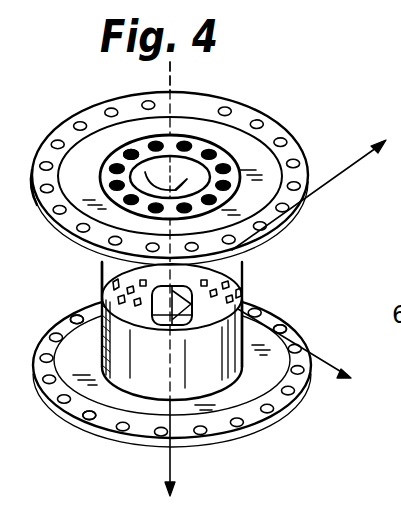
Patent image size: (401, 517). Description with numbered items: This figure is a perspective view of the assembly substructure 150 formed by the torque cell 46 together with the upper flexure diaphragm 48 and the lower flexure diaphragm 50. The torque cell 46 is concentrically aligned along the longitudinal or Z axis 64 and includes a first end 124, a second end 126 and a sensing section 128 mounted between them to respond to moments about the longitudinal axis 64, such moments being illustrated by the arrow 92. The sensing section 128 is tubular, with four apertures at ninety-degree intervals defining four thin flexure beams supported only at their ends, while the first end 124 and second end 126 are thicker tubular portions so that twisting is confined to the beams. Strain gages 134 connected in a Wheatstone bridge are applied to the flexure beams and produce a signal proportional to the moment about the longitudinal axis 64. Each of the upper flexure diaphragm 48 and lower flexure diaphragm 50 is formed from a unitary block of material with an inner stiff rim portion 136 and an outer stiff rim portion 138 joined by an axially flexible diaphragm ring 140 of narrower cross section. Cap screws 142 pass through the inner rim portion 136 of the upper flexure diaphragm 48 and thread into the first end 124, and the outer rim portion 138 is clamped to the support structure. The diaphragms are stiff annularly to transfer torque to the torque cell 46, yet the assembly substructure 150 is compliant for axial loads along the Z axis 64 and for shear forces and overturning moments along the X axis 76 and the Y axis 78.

The torque cell 46 is at (100, 338).
The upper flexure diaphragm 48 is at (303, 156).
The lower flexure diaphragm 50 is at (258, 428).
The longitudinal axis 64 is at (173, 468).
The X axis 76 is at (369, 128).
The Y axis 78 is at (336, 378).
The arrow illustrating moment Mz 92 is at (175, 134).
The first end 124 is at (210, 270).
The second end 126 is at (245, 318).
The sensing section 128 is at (214, 278).
The strain gages 134 is at (183, 325).
The inner stiff rim portion 136 is at (127, 137).
The outer stiff rim portion 138 is at (80, 428).
The flexible diaphragm ring 140 is at (283, 130).
The cap screws 142 is at (218, 143).
The assembly substructure 150 is at (27, 160).